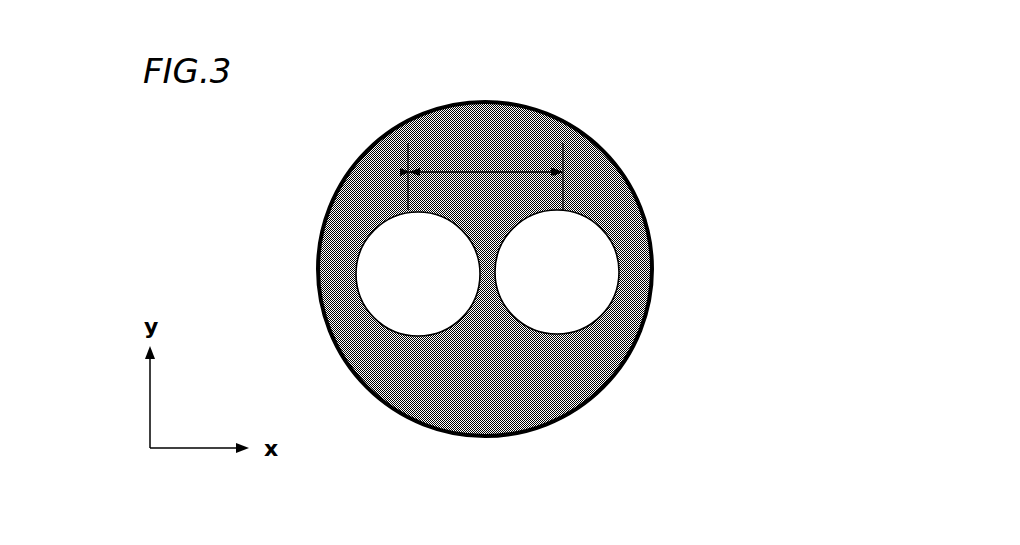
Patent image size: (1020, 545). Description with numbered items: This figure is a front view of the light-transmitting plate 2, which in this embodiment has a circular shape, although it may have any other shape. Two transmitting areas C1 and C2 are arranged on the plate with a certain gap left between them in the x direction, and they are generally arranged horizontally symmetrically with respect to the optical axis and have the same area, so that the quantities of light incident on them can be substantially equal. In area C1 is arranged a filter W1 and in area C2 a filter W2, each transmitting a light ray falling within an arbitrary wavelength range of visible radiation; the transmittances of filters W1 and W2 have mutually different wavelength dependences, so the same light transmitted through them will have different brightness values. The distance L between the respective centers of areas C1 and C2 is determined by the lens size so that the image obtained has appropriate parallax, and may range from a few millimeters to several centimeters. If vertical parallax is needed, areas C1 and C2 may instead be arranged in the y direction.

The light-transmitting plate 2 is at (586, 132).
The area C1 is at (337, 260).
The area C2 is at (622, 265).
The filter W1 is at (414, 282).
The filter W2 is at (556, 282).
The distance L is at (485, 173).